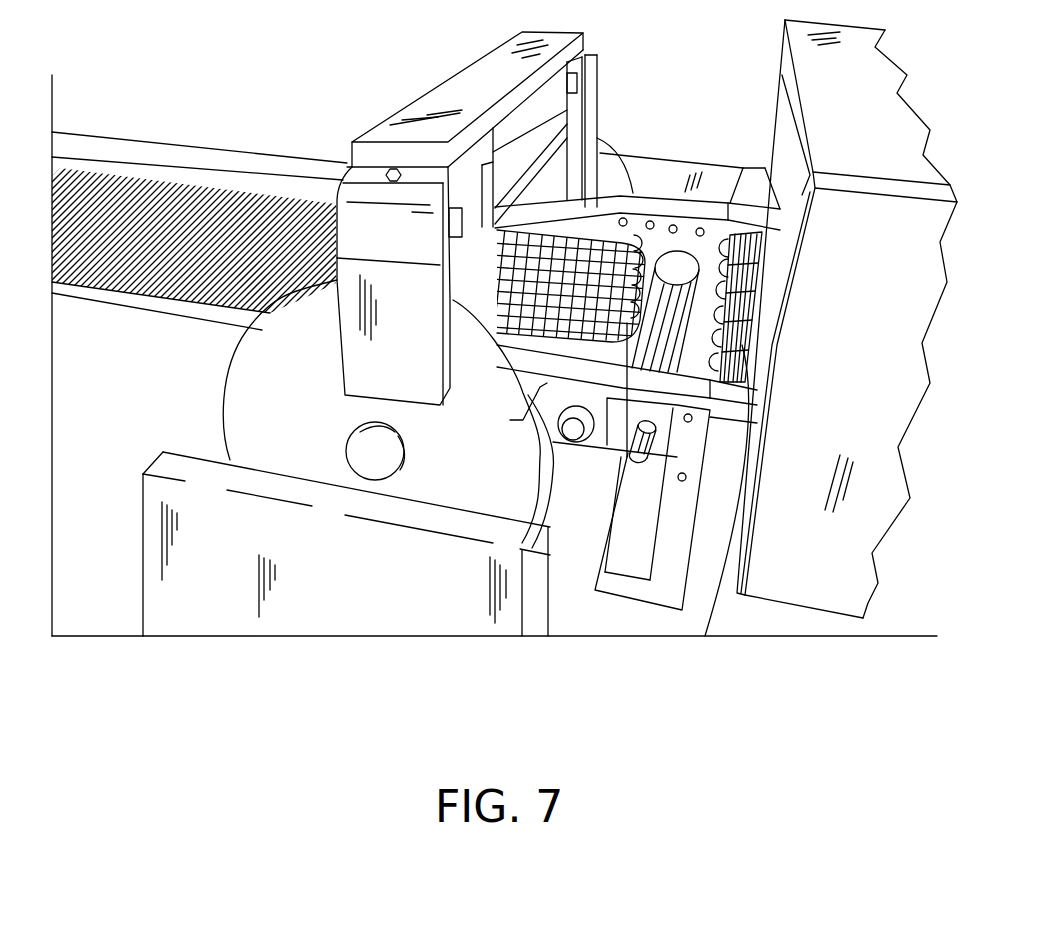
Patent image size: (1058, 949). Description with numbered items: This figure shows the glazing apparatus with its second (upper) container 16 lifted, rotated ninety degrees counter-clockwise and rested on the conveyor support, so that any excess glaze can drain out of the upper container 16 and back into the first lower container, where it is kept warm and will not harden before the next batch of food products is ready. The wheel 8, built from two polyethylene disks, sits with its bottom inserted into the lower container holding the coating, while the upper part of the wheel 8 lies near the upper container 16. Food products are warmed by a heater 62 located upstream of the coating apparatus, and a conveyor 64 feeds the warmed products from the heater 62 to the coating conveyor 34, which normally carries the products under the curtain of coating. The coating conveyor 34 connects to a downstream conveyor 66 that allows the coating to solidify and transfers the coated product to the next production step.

The wheel 8 is at (575, 443).
The second (upper) container 16 is at (368, 238).
The coating conveyor 34 is at (596, 590).
The heater 62 is at (833, 547).
The feed conveyor 64 is at (740, 350).
The downstream conveyor 66 is at (150, 262).